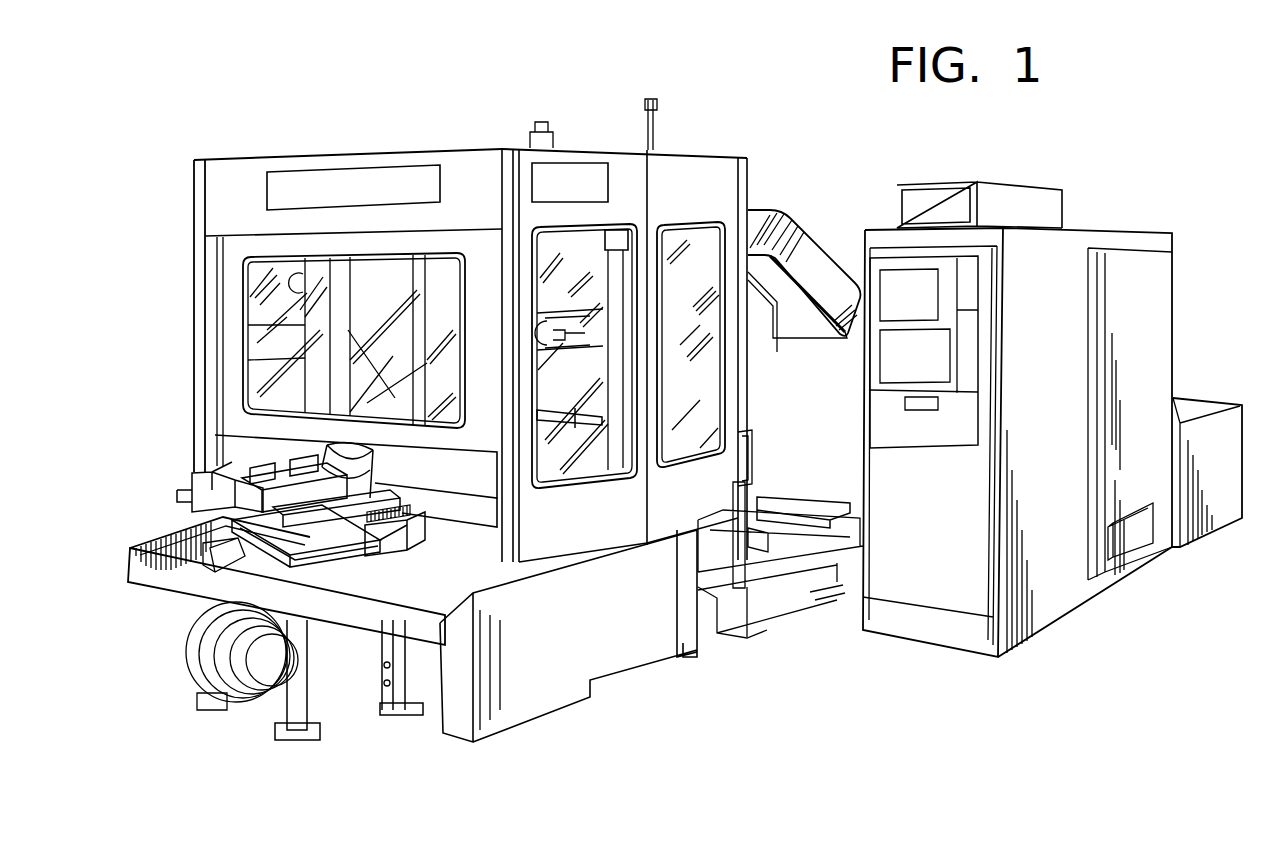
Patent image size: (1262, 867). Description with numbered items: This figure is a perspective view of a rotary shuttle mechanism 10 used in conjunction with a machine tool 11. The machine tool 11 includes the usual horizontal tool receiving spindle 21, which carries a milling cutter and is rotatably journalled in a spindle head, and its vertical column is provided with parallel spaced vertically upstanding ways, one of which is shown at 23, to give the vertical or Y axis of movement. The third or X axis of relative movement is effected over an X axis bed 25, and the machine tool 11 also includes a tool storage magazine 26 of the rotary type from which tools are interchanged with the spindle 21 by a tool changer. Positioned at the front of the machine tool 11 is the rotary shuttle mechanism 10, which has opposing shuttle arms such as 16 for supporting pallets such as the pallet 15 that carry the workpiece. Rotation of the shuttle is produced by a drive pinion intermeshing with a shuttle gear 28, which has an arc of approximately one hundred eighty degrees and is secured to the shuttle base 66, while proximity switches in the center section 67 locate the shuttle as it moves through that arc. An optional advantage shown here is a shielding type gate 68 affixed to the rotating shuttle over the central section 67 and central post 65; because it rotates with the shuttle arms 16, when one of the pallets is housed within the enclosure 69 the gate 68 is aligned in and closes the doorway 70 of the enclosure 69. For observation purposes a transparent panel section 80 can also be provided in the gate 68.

The rotary shuttle mechanism 10 is at (204, 527).
The machine tool 11 is at (573, 413).
The pallet 15 is at (240, 464).
The shuttle arm 16 is at (307, 530).
The tool receiving spindle 21 is at (535, 333).
The vertically upstanding way 23 is at (610, 275).
The X axis bed 25 is at (795, 497).
The tool storage magazine 26 is at (797, 248).
The shuttle gear 28 is at (407, 530).
The central post 65 is at (378, 453).
The shuttle base 66 is at (340, 567).
The center section 67 is at (387, 490).
The shielding type gate 68 is at (228, 332).
The enclosure 69 is at (213, 203).
The doorway 70 is at (209, 298).
The transparent panel section 80 is at (372, 277).